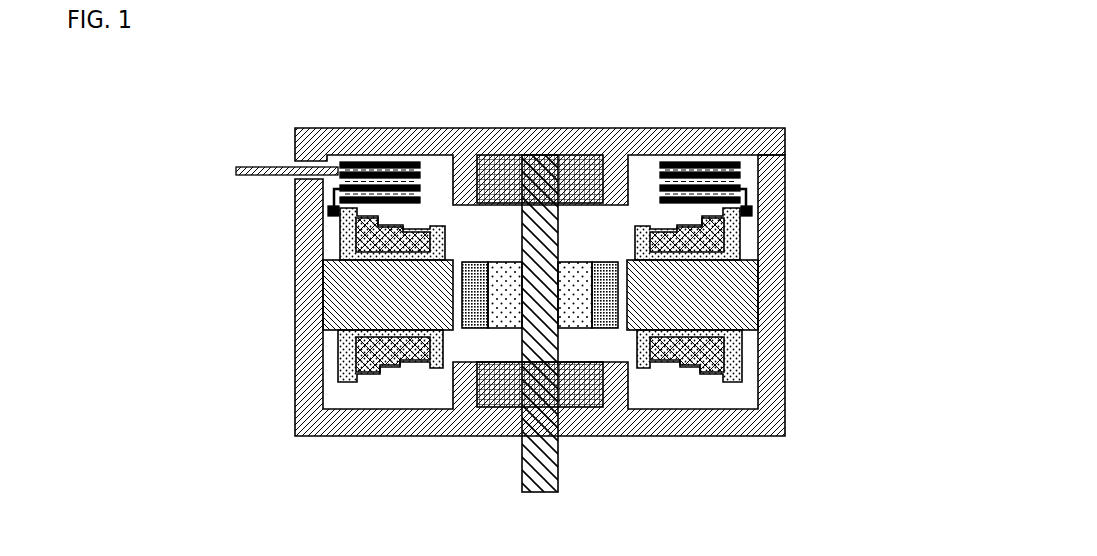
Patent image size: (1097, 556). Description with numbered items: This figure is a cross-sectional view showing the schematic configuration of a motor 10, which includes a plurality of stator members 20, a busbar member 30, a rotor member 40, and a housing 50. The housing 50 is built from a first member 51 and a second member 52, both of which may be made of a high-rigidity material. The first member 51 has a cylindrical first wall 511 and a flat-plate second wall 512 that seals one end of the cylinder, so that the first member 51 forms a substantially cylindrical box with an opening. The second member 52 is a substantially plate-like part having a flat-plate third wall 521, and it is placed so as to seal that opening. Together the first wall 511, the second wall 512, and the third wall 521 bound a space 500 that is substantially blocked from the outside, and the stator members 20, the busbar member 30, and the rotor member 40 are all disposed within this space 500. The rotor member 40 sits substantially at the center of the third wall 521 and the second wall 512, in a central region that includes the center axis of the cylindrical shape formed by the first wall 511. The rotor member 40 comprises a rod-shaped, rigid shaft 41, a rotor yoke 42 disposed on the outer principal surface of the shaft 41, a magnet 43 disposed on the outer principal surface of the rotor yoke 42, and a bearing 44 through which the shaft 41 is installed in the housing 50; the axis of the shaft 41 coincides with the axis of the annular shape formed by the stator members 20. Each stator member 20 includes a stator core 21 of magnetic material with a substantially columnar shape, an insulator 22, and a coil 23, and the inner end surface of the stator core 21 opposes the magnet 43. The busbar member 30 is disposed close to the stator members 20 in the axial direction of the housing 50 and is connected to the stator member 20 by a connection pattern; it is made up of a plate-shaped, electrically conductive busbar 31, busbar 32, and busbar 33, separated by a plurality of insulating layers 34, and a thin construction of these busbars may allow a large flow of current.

The motor 10 is at (814, 59).
The stator member 20 is at (232, 255).
The stator core 21 is at (347, 292).
The insulator 22 is at (343, 240).
The coil 23 is at (355, 349).
The busbar member 30 is at (859, 155).
The busbar 31 is at (747, 203).
The busbar 32 is at (744, 183).
The busbar 33 is at (738, 173).
The insulating layer 34 is at (742, 168).
The rotor member 40 is at (725, 506).
The shaft 41 is at (552, 328).
The rotor yoke 42 is at (570, 317).
The magnet 43 is at (602, 315).
The bearing 44 is at (580, 157).
The housing 50 is at (216, 70).
The first member 51 is at (303, 193).
The second member 52 is at (348, 136).
The space 500 is at (328, 160).
The first wall 511 is at (296, 216).
The second wall 512 is at (402, 424).
The third wall 521 is at (410, 132).